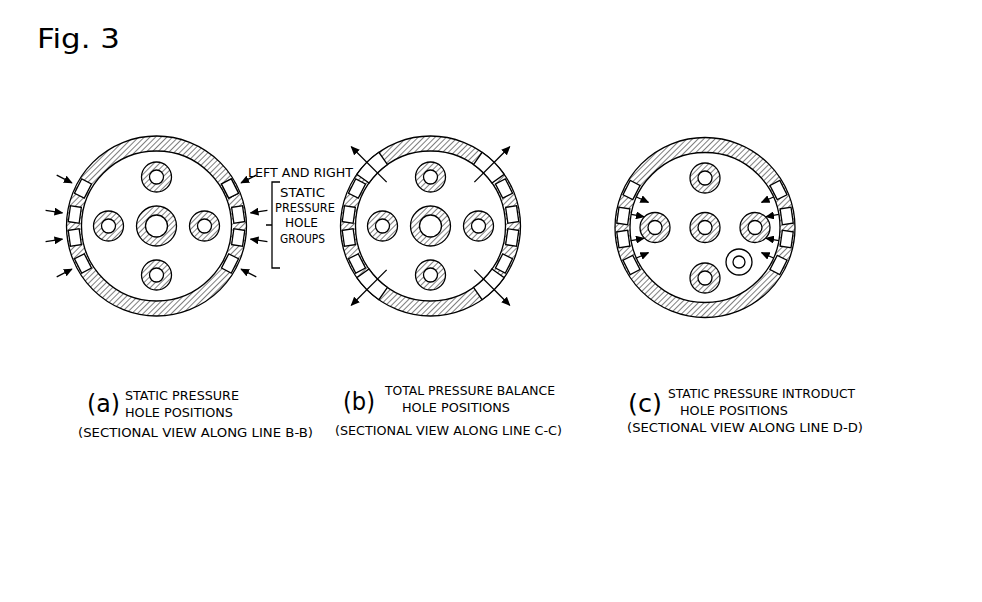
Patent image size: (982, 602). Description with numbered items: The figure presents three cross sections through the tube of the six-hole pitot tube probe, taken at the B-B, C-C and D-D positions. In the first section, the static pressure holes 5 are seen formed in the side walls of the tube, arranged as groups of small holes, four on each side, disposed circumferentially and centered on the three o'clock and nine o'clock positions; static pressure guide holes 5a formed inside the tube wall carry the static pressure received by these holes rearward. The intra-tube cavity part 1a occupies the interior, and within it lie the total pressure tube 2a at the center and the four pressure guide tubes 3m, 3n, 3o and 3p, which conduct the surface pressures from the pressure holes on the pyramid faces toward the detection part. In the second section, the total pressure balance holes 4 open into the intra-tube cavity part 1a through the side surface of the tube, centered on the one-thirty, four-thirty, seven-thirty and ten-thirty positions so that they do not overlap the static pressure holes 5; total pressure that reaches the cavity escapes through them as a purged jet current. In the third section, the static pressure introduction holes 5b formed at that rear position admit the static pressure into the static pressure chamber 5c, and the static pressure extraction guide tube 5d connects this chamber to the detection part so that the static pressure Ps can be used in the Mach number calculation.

The intra-tube cavity part 1a is at (190, 248).
The total pressure tube 2a is at (142, 213).
The pressure guide tube 3m is at (156, 170).
The pressure guide tube 3n is at (203, 213).
The pressure guide tube 3o is at (168, 277).
The pressure guide tube 3p is at (110, 238).
The total pressure balance holes 4 is at (382, 163).
The static pressure holes 5 is at (242, 187).
The static pressure guide holes 5a is at (237, 185).
The static pressure introduction holes 5b is at (633, 195).
The static pressure chamber 5c is at (730, 190).
The static pressure extraction guide tube 5d is at (740, 262).